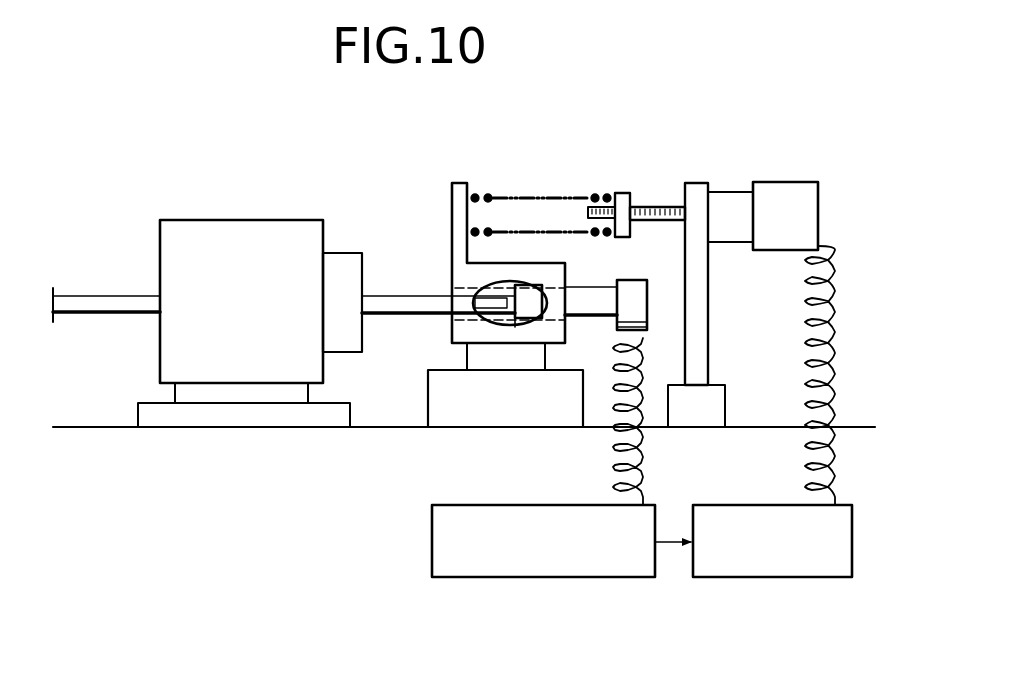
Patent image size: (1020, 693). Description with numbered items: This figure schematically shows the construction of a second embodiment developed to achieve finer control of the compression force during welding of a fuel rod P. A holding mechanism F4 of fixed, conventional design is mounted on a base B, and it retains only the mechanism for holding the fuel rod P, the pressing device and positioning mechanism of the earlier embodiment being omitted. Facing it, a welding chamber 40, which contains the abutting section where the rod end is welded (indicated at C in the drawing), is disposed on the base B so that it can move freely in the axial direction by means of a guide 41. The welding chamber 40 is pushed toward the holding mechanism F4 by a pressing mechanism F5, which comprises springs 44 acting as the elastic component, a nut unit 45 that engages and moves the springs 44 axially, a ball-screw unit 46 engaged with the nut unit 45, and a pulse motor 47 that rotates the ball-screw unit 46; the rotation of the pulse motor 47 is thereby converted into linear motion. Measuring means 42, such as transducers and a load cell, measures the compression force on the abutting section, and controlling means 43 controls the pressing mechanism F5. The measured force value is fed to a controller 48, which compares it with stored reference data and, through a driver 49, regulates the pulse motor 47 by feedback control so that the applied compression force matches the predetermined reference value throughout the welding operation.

The fuel rod P is at (102, 294).
The holding mechanism F4 is at (276, 212).
The base B is at (388, 427).
The workpiece C is at (508, 326).
The welding chamber 40 is at (512, 263).
The guide 41 is at (467, 357).
The measuring means 42 is at (637, 280).
The controlling means 43 is at (677, 588).
The springs 44 is at (553, 192).
The nut unit 45 is at (622, 193).
The ball-screw unit 46 is at (660, 206).
The pressing mechanism F5 is at (652, 164).
The pulse motor 47 is at (787, 182).
The controller 48 is at (515, 505).
The driver 49 is at (750, 505).